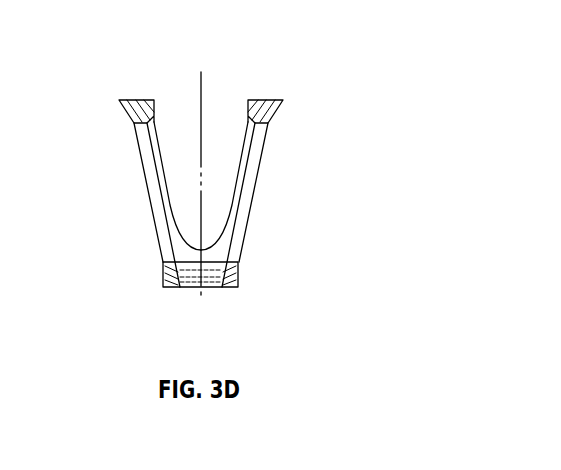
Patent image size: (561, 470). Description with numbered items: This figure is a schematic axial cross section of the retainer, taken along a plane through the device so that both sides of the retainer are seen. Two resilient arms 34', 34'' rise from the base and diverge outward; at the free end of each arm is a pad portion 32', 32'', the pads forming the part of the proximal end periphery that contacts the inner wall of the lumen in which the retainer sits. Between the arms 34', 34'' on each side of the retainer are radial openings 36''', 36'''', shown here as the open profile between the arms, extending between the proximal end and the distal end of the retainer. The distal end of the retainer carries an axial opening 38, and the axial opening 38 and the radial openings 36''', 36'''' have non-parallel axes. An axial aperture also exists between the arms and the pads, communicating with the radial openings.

The pad portion 32'' is at (88, 104).
The pad portion 32' is at (295, 78).
The resilient arm 34'' is at (121, 205).
The resilient arm 34' is at (275, 205).
The radial opening 36''' is at (176, 132).
The radial opening 36'''' is at (227, 132).
The axial opening 38 is at (208, 275).